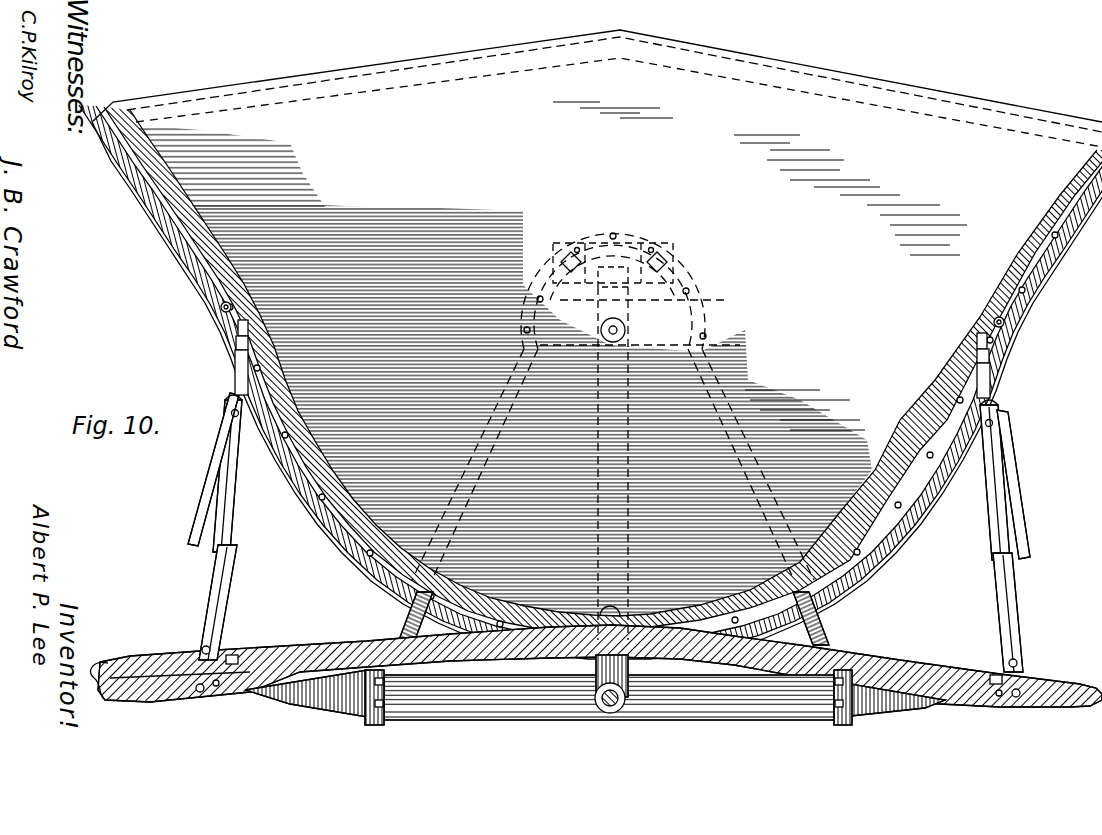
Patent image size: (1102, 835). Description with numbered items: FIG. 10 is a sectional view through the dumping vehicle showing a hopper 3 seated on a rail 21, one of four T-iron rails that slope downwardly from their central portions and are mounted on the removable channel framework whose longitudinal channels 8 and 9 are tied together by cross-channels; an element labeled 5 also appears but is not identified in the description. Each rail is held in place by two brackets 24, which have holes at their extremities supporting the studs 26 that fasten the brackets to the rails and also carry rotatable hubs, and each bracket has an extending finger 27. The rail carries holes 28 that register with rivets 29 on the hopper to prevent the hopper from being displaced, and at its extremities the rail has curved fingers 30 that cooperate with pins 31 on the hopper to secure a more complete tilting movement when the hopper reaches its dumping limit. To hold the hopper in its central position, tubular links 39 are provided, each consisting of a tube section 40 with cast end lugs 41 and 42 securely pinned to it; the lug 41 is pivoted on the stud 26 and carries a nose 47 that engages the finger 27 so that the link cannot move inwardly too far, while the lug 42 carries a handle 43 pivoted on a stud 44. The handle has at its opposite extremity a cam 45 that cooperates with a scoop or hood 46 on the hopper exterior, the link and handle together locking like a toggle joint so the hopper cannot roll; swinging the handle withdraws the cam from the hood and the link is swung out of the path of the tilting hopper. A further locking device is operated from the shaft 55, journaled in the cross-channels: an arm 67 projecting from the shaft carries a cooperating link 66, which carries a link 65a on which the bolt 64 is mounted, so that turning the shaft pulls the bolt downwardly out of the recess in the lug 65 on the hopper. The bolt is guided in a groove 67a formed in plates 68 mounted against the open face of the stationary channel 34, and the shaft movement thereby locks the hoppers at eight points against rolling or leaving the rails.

The hopper 3 is at (1035, 280).
The base beam 5 is at (790, 724).
The channel 8 is at (843, 726).
The channel 9 is at (377, 726).
The rail 21 is at (928, 669).
The bracket 24 is at (326, 702).
The stud 26 is at (200, 693).
The extending finger 27 is at (216, 688).
The hole 28 is at (864, 644).
The rivet 29 is at (305, 492).
The curved finger 30 is at (108, 680).
The pin 31 is at (221, 309).
The channel 34 is at (407, 612).
The link 39 is at (207, 621).
The tube section 40 is at (234, 544).
The end lug 41 is at (200, 656).
The end lug 42 is at (232, 388).
The handle 43 is at (200, 490).
The stud 44 is at (232, 357).
The cam 45 is at (228, 334).
The hood 46 is at (270, 330).
The nose 47 is at (234, 660).
The shaft 55 is at (611, 713).
The bolt 64 is at (670, 277).
The lug 65 is at (660, 253).
The link 65a is at (700, 301).
The cooperating link 66 is at (632, 428).
The arm 67 is at (630, 683).
The groove 67a is at (585, 319).
The plate 68 is at (705, 345).